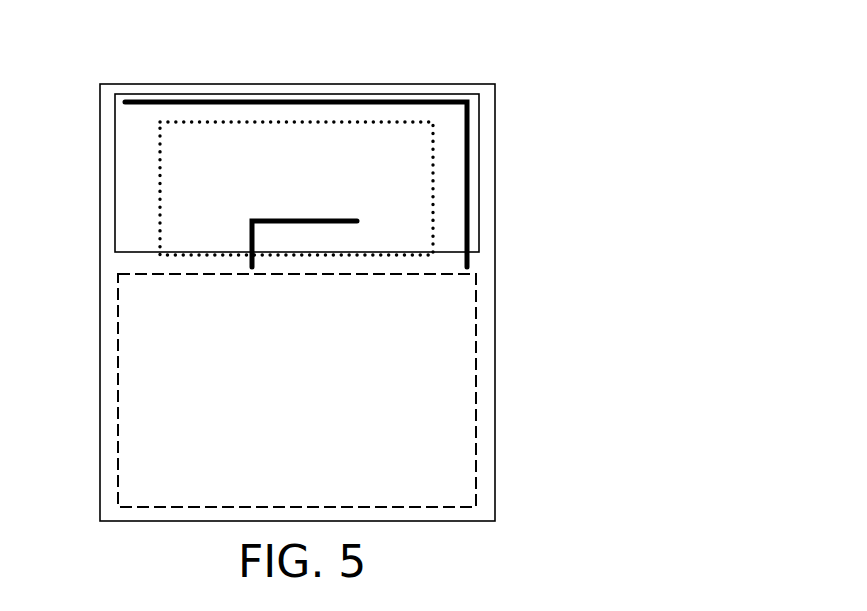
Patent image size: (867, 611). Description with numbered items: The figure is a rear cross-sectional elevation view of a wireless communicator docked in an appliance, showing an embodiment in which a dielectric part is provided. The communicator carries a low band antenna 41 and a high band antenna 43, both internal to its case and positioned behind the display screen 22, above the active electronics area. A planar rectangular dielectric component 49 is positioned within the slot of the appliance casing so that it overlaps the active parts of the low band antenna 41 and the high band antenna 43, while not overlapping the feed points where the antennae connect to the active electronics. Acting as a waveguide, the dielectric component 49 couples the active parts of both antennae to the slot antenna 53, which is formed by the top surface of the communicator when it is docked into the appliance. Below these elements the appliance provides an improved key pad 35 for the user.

The slot antenna 53 is at (196, 84).
The planar rectangular dielectric component 49 is at (479, 170).
The low band antenna 41 is at (325, 99).
The display screen 22 is at (399, 120).
The high band antenna 43 is at (250, 233).
The key pad 35 is at (142, 400).